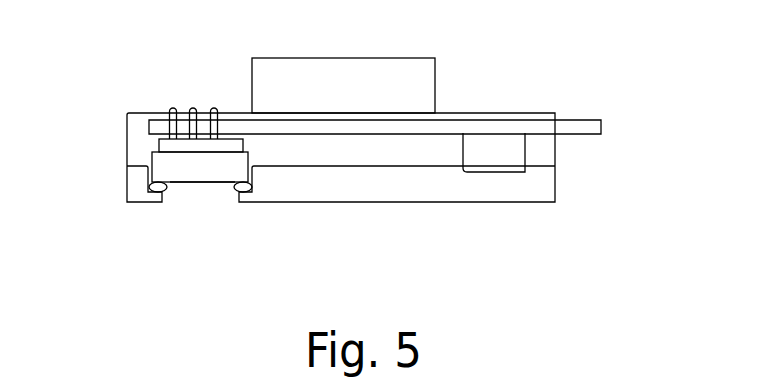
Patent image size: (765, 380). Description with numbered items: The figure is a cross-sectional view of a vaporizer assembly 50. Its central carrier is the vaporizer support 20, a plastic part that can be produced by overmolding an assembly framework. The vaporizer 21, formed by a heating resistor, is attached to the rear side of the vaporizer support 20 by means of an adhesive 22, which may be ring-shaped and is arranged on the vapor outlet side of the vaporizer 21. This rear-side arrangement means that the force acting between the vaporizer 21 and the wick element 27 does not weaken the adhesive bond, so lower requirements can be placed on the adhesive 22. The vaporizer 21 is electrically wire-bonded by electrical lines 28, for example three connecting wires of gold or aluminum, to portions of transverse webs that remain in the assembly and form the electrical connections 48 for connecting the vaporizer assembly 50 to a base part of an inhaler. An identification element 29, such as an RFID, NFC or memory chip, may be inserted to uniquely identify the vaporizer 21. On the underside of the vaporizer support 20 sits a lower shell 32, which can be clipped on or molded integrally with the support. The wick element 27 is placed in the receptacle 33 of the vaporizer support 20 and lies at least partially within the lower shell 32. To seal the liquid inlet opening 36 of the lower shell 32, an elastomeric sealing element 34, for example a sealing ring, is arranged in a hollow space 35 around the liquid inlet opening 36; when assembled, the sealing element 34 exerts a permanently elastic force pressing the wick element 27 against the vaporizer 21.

The vaporizer support 20 is at (437, 87).
The vaporizer 21 is at (158, 141).
The adhesive 22 is at (151, 140).
The wick element 27 is at (192, 170).
The electrical lines 28 is at (172, 108).
The identification element 29 is at (518, 153).
The lower shell 32 is at (388, 203).
The receptacle 33 is at (167, 161).
The sealing element 34 is at (231, 186).
The hollow space 35 is at (252, 183).
The liquid inlet opening 36 is at (182, 198).
The electrical connections 48 is at (582, 127).
The vaporizer assembly 50 is at (358, 216).